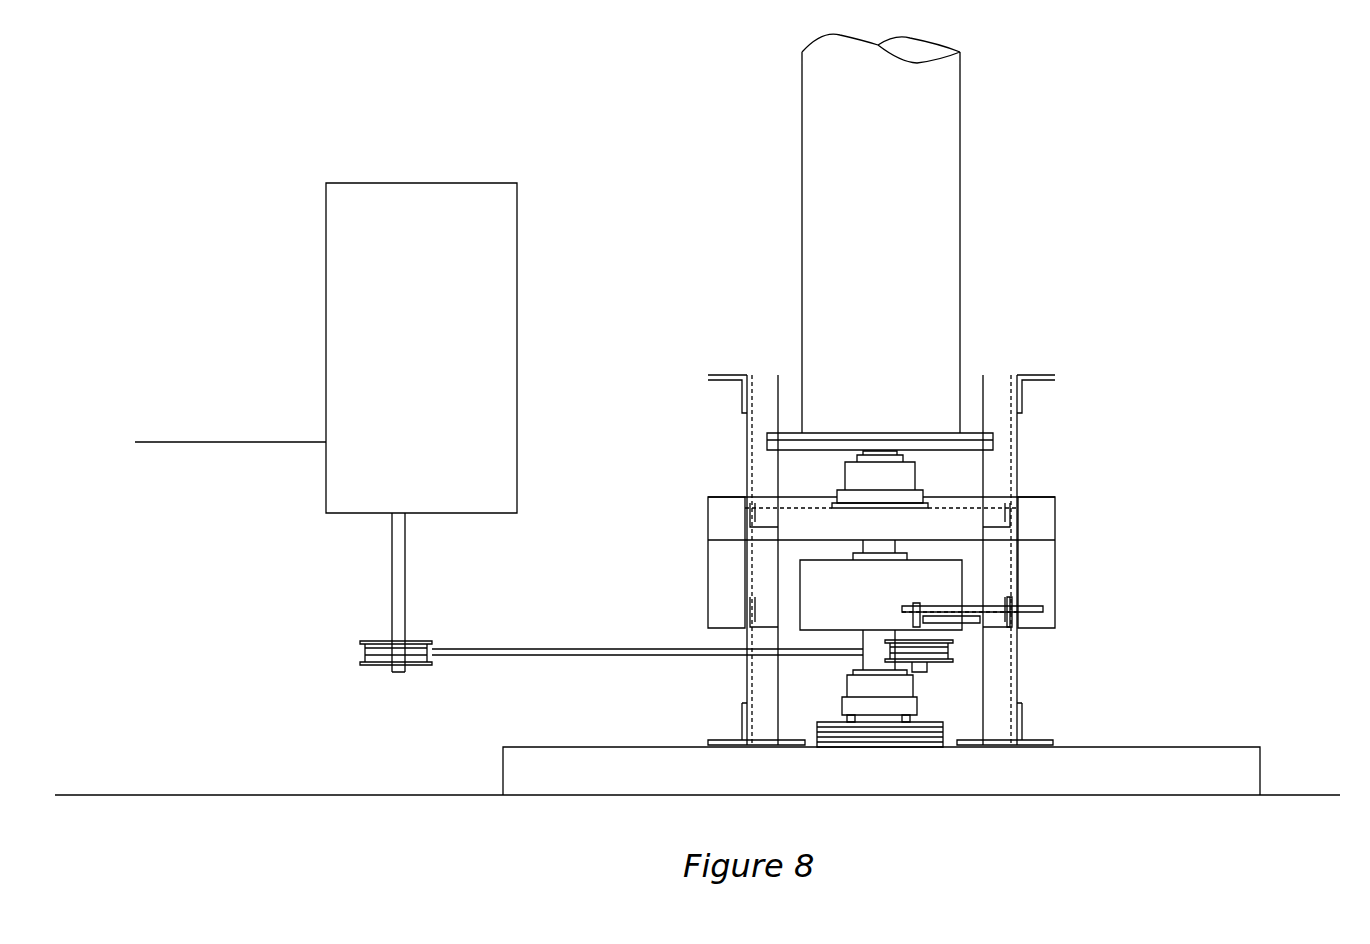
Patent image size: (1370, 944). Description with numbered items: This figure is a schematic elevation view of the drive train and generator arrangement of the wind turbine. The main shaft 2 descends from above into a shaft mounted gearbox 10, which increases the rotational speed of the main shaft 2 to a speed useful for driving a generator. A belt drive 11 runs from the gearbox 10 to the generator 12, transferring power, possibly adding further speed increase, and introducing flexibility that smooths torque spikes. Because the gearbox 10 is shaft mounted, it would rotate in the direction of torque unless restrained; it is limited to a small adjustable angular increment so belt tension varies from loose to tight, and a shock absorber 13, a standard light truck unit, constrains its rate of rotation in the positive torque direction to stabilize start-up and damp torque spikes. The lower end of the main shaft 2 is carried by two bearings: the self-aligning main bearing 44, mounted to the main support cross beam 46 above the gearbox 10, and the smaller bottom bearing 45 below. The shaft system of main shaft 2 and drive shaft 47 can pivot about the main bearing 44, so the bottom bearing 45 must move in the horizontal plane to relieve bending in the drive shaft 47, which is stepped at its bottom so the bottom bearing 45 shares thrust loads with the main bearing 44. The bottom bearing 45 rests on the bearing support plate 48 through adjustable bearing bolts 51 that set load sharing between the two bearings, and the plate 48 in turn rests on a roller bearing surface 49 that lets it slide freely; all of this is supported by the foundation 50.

The main shaft 2 is at (810, 133).
The shaft mounted gearbox 10 is at (881, 591).
The belt drive 11 is at (520, 649).
The generator 12 is at (450, 183).
The shock absorber 13 is at (1043, 607).
The main bearing 44 is at (907, 475).
The bottom bearing 45 is at (903, 685).
The main support cross beam 46 is at (825, 508).
The drive shaft 47 is at (863, 542).
The bearing support plate 48 is at (908, 725).
The roller bearing surface 49 is at (888, 737).
The foundation 50 is at (1195, 748).
The adjustable bearing bolts 51 is at (847, 715).